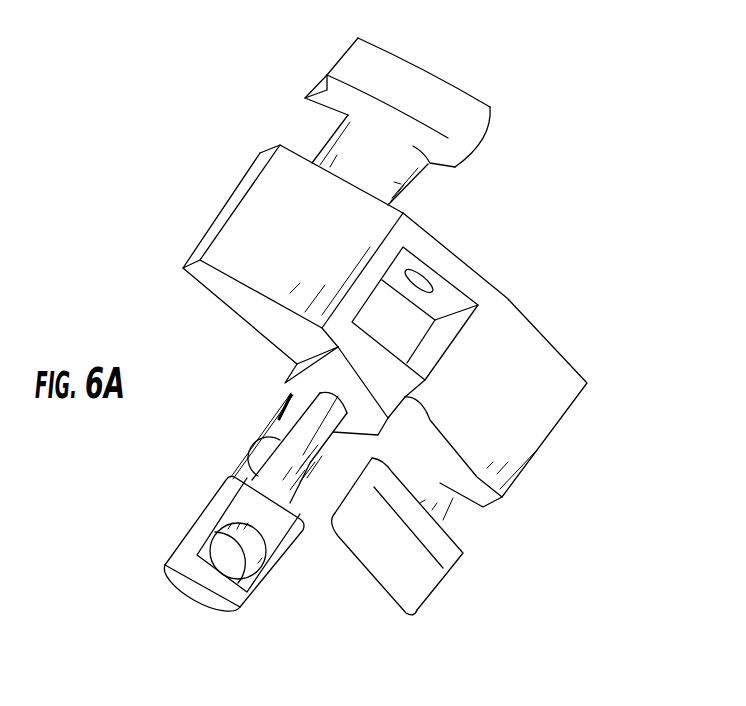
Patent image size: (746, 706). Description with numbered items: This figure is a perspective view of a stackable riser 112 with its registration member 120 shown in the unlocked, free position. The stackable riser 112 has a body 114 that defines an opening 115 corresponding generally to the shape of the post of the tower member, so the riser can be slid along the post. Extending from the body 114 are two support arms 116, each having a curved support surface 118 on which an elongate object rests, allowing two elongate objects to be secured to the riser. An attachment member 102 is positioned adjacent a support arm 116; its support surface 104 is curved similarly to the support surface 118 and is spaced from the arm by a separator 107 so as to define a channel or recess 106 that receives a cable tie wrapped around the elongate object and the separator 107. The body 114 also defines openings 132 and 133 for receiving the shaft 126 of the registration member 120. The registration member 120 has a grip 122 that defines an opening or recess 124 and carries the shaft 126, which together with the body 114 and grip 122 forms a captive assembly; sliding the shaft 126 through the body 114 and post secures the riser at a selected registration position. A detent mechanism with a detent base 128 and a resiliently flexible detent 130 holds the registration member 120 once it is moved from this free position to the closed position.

The attachment member 102 is at (374, 104).
The support surface 104 is at (357, 62).
The recess 106 is at (371, 130).
The separator 107 is at (417, 192).
The stackable riser 112 is at (354, 359).
The body 114 is at (478, 288).
The opening 115 is at (412, 337).
The support arm 116 is at (356, 326).
The support surface 118 is at (312, 250).
The registration member 120 is at (199, 489).
The grip 122 is at (226, 556).
The recess 124 is at (238, 567).
The shaft 126 is at (302, 391).
The detent base 128 is at (262, 418).
The detent 130 is at (258, 457).
The opening 132 is at (418, 280).
The opening 133 is at (315, 472).